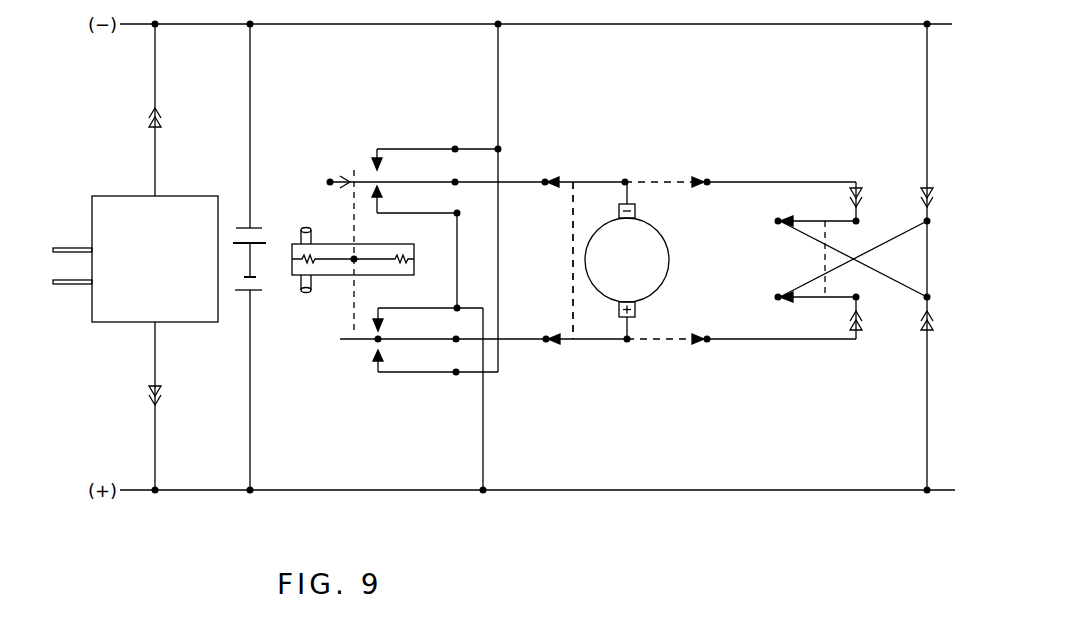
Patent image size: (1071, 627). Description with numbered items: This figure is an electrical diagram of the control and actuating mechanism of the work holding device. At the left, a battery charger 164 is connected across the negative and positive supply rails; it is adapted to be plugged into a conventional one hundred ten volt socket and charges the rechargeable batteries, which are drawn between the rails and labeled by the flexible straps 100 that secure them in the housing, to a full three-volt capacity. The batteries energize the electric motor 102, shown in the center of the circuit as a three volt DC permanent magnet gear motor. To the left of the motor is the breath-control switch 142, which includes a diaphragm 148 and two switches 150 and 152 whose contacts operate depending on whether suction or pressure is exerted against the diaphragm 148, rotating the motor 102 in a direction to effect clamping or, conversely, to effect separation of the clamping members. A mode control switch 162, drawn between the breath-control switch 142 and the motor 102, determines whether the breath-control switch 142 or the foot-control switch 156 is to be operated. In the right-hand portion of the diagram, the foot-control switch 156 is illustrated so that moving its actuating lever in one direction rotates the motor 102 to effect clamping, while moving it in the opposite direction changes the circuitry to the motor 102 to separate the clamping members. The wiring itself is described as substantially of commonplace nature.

The flexible straps 100 is at (252, 227).
The electric motor 102 is at (663, 258).
The breath-control switch 142 is at (361, 298).
The diaphragm 148 is at (377, 259).
The switch 150 is at (428, 149).
The switch 152 is at (420, 372).
The foot-control switch 156 is at (813, 259).
The mode control switch 162 is at (573, 260).
The battery charger 164 is at (176, 277).